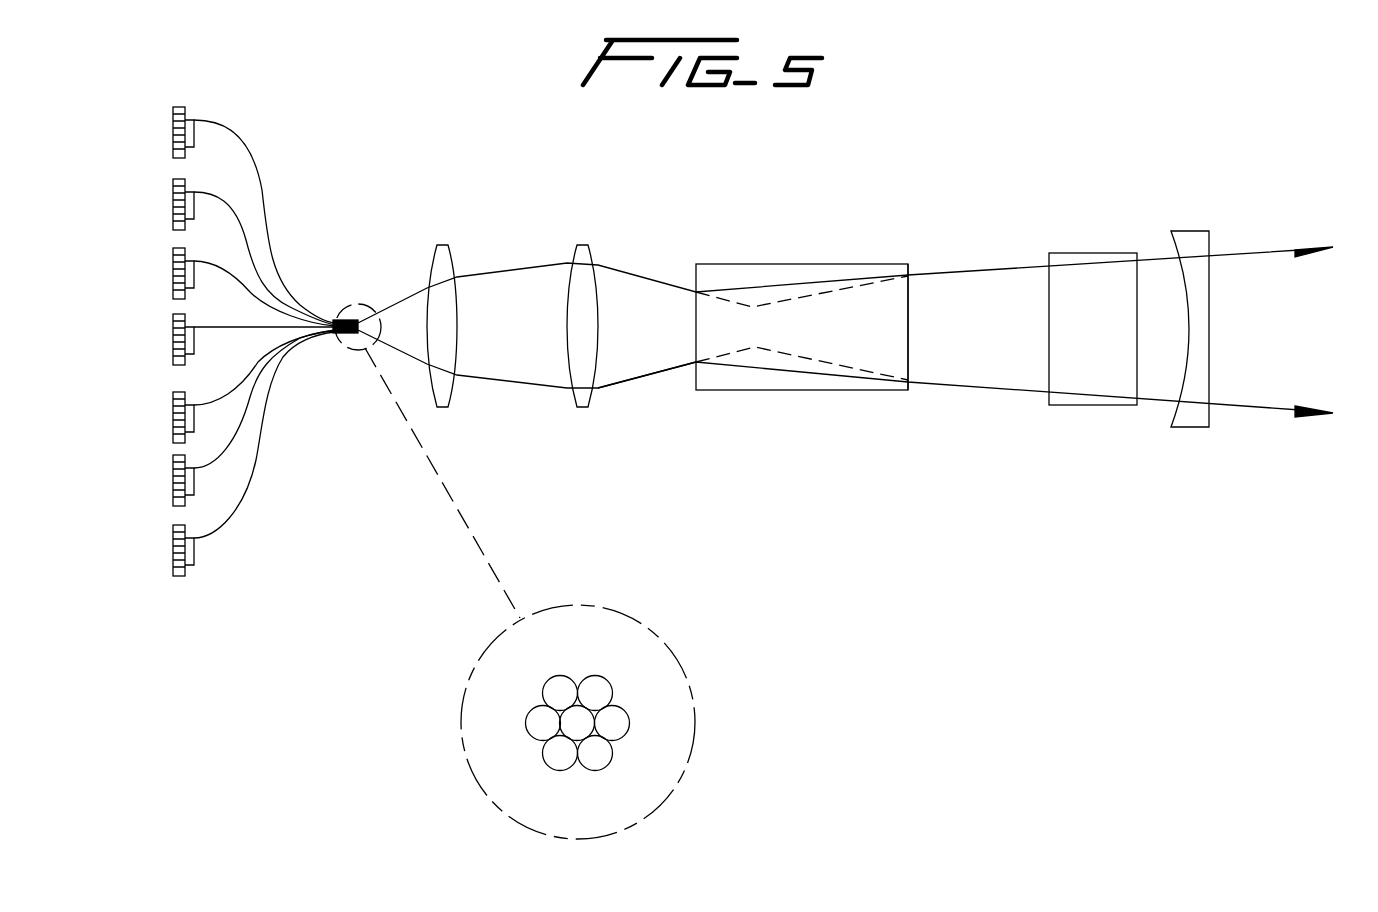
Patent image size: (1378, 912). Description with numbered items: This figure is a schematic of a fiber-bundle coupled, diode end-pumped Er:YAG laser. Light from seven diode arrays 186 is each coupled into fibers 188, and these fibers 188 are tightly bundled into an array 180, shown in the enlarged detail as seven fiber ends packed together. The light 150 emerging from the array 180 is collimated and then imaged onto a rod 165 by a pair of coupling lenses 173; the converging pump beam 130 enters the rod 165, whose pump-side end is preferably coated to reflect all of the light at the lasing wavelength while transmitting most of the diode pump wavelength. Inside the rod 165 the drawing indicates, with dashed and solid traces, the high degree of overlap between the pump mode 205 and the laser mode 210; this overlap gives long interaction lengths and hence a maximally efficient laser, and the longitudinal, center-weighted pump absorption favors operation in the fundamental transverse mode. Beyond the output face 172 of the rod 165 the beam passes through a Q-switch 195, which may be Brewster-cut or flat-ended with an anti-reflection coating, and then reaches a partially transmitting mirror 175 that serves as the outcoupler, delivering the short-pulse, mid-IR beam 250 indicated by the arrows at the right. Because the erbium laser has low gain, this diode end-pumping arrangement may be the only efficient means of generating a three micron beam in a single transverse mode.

The diode arrays 186 is at (172, 210).
The fibers 188 is at (263, 460).
The array 180 is at (352, 350).
The light 150 is at (402, 300).
The coupling lenses 173 is at (578, 407).
The pump beam input 130 is at (696, 364).
The rod 165 is at (805, 390).
The laser mode 210 is at (770, 287).
The pump mode 205 is at (842, 292).
The output face 172 is at (910, 390).
The Q-switch 195 is at (1097, 255).
The partially transmitting mirror 175 is at (1197, 240).
The mid-IR beam 250 is at (1265, 248).